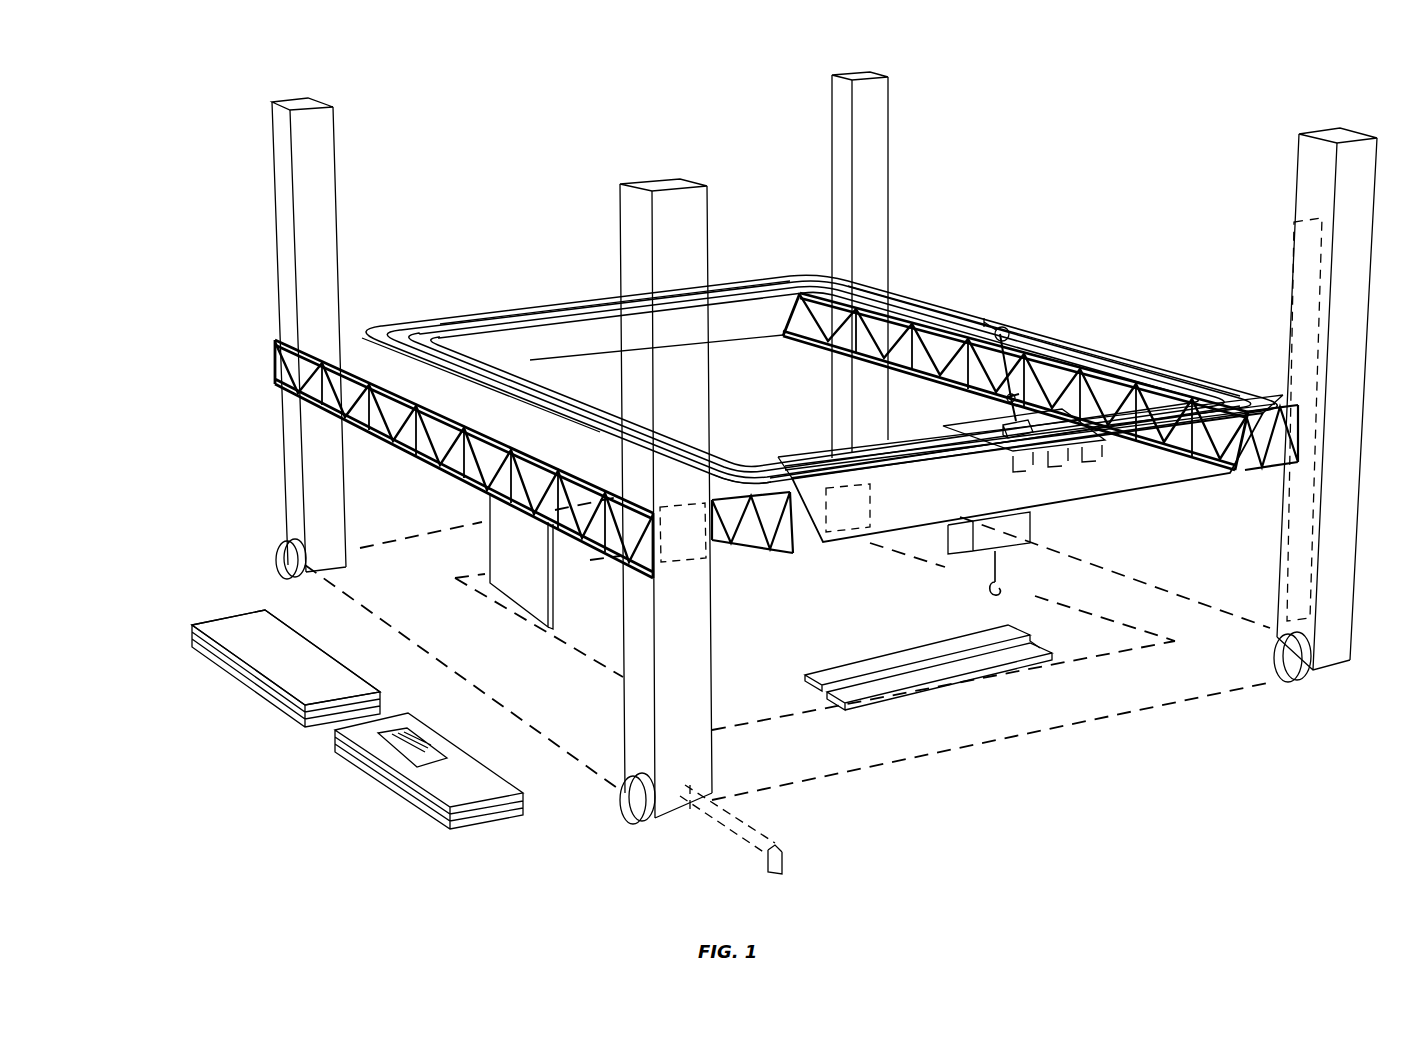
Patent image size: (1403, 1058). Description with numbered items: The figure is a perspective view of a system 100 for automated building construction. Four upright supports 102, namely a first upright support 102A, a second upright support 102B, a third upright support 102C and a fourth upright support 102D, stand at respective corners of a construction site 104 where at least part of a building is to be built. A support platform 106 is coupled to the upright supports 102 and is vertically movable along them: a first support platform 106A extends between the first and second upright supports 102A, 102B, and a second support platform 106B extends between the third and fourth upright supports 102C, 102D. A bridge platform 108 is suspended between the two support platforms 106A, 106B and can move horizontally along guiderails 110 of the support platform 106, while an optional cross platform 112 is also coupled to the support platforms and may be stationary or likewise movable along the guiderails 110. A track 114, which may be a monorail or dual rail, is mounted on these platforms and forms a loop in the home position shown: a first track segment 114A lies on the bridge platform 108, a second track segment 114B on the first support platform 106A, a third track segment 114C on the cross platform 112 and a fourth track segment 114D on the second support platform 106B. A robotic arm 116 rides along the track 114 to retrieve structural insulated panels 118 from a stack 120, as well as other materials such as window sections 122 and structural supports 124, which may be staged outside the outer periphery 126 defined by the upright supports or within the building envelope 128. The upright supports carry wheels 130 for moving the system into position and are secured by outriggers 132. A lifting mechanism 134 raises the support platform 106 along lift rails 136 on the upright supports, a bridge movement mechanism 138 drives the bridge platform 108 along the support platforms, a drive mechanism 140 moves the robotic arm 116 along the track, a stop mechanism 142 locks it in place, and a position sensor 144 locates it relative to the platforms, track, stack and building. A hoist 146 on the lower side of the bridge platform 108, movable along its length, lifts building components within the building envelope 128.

The system for automated building construction 100 is at (192, 66).
The upright supports 102 is at (245, 335).
The first upright support 102A is at (277, 134).
The second upright support 102B is at (658, 181).
The third upright support 102C is at (840, 100).
The fourth upright support 102D is at (1310, 166).
The construction site 104 is at (770, 705).
The support platform 106 is at (487, 423).
The first support platform 106A is at (320, 348).
The second support platform 106B is at (1082, 326).
The bridge platform 108 is at (1167, 464).
The guiderails 110 is at (738, 484).
The cross platform 112 is at (483, 325).
The track 114 is at (1022, 390).
The first track segment 114A is at (1177, 408).
The second track segment 114B is at (415, 342).
The third track segment 114C is at (562, 300).
The fourth track segment 114D is at (903, 300).
The robotic arm 116 is at (1002, 332).
The structural insulated panels 118 is at (214, 626).
The stack of SIPs 120 is at (262, 709).
The window sections 122 is at (388, 805).
The structural supports 124 is at (1042, 658).
The outer periphery 126 is at (968, 744).
The building envelope 128 is at (945, 688).
The wheels 130 is at (627, 808).
The outriggers 132 is at (735, 835).
The lifting mechanism 134 is at (690, 574).
The lift rails 136 is at (1298, 244).
The bridge movement mechanism 138 is at (850, 540).
The drive mechanism 140 is at (1055, 470).
The stop mechanism 142 is at (1020, 474).
The position sensor 144 is at (1090, 464).
The hoist 146 is at (966, 550).